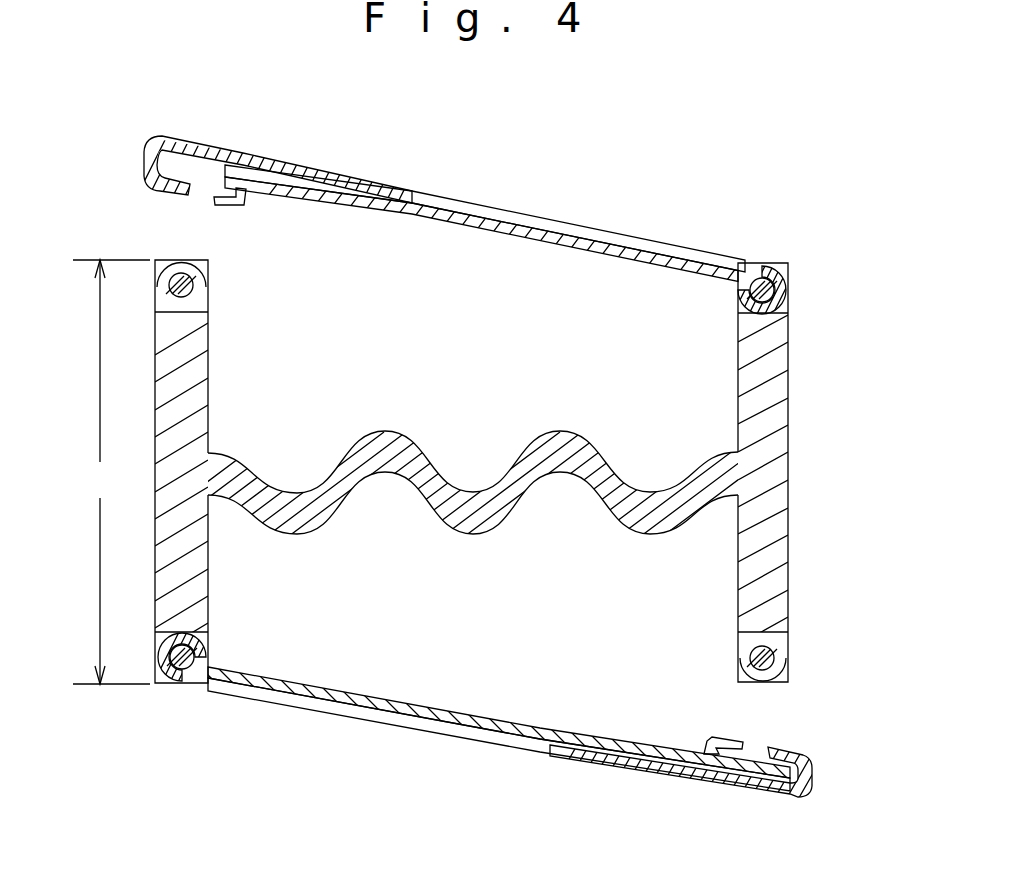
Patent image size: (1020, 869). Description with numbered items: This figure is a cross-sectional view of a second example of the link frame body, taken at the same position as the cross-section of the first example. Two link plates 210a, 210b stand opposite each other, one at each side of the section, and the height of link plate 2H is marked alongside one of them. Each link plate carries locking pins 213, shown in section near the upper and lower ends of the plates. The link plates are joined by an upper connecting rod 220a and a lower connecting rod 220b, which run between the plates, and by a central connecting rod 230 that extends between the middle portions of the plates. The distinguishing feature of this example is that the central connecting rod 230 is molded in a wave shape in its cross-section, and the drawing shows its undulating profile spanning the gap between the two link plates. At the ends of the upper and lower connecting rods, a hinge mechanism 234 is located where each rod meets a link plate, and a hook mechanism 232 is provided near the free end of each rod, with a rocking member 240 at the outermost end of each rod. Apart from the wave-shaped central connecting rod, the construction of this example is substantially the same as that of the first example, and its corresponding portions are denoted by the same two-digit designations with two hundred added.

The link plate 210a is at (192, 375).
The link plate 210b is at (790, 462).
The locking pin 213 is at (197, 288).
The upper connecting rod 220a is at (455, 196).
The lower connecting rod 220b is at (396, 735).
The central connecting rod 230 is at (556, 431).
The hook mechanism 232 is at (248, 202).
The hinge mechanism 234 is at (783, 292).
The rocking member 240 is at (146, 163).
The height of link plate 2H is at (111, 472).